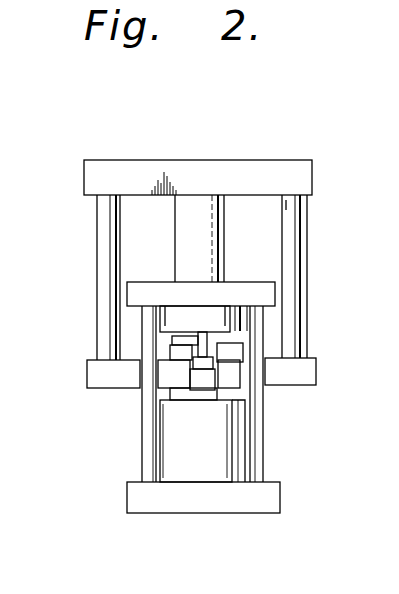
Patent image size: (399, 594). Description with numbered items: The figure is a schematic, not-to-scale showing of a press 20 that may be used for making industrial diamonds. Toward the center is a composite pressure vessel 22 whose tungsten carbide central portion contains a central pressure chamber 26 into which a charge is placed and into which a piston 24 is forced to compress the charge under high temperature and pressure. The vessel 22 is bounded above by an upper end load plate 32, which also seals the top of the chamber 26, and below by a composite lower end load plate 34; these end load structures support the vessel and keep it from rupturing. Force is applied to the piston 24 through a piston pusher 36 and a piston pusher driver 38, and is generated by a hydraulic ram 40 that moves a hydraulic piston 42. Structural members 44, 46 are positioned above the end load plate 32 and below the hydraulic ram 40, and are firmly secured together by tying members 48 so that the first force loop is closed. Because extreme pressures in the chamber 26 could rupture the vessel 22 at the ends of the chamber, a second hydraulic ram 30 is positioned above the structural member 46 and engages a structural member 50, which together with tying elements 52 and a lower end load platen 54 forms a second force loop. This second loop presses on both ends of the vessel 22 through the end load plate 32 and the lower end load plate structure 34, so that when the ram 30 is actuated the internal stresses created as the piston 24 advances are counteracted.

The press apparatus 20 is at (322, 267).
The composite pressure vessel 22 is at (183, 338).
The piston 24 is at (210, 348).
The central pressure chamber 26 is at (243, 335).
The second hydraulic ram 30 is at (198, 208).
The upper end load plate 32 is at (172, 318).
The composite lower end load plate 34 is at (178, 353).
The piston pusher 36 is at (177, 383).
The piston pusher driver 38 is at (160, 408).
The hydraulic ram 40 is at (190, 468).
The hydraulic piston 42 is at (203, 397).
The structural member 44 is at (255, 500).
The structural member 46 is at (245, 290).
The tying members 48 is at (147, 468).
The structural member 50 is at (131, 172).
The tying elements 52 is at (305, 206).
The lower end load platen 54 is at (307, 372).